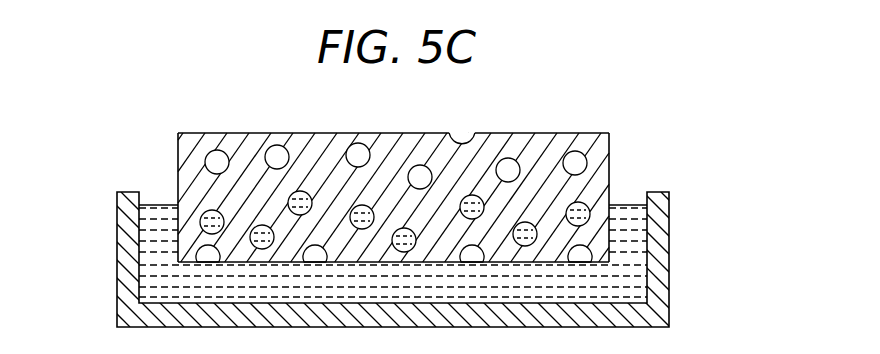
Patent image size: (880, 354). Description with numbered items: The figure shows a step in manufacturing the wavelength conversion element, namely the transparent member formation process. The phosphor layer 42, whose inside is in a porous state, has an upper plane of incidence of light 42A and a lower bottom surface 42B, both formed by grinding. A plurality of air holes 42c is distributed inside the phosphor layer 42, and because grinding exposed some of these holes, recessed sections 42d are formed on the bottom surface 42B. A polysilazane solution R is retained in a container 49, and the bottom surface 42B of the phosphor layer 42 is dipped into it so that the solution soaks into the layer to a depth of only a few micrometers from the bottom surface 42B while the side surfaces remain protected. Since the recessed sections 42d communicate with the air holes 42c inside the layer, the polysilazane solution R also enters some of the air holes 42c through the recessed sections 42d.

The phosphor layer 42 is at (603, 160).
The plane of incidence of light 42A is at (603, 135).
The bottom surface 42B is at (604, 264).
The air holes 42c is at (215, 162).
The recessed sections 42d is at (209, 250).
The polysilazane solution R is at (635, 228).
The container 49 is at (125, 312).